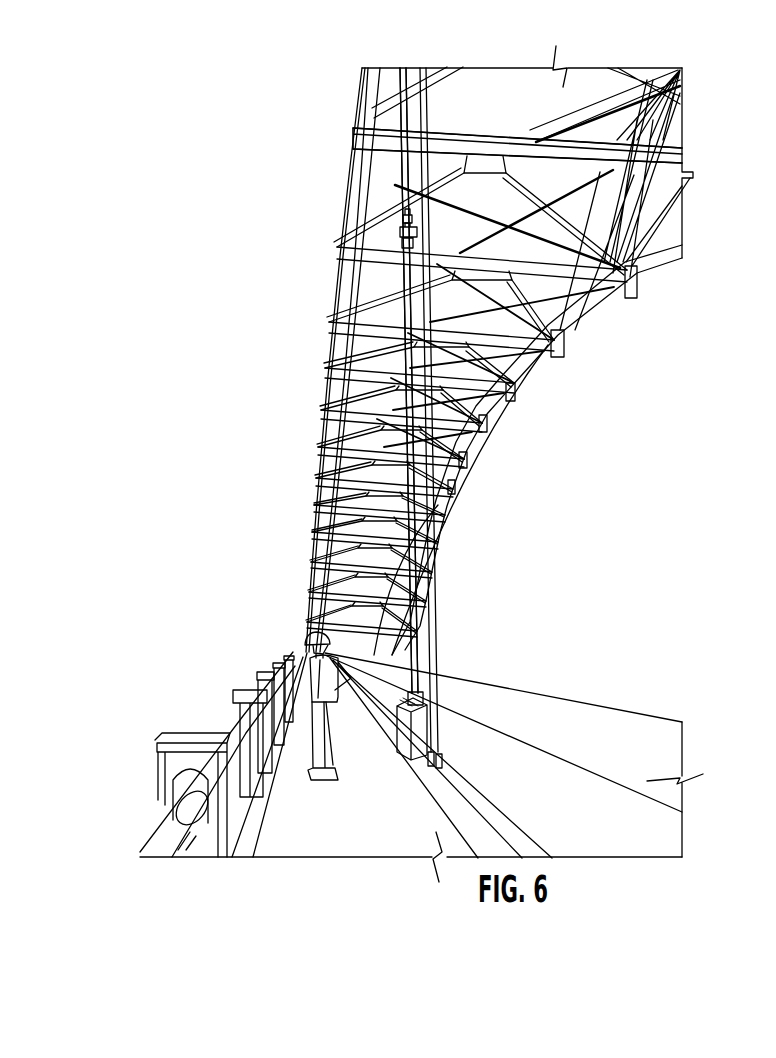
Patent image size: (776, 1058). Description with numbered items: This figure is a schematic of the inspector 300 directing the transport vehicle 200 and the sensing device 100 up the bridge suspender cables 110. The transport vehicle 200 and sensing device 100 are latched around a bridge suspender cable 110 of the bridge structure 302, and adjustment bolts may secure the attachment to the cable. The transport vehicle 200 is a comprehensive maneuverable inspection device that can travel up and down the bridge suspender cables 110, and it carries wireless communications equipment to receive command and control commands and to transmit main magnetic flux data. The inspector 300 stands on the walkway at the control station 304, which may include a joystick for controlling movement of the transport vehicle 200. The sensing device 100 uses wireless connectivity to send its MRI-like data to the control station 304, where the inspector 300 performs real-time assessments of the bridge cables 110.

The sensing device 100 is at (397, 213).
The transport vehicle 200 is at (397, 242).
The bridge suspender cable 110 is at (447, 497).
The inspector 300 is at (307, 643).
The bridge structure 302 is at (384, 148).
The control station 304 is at (418, 698).